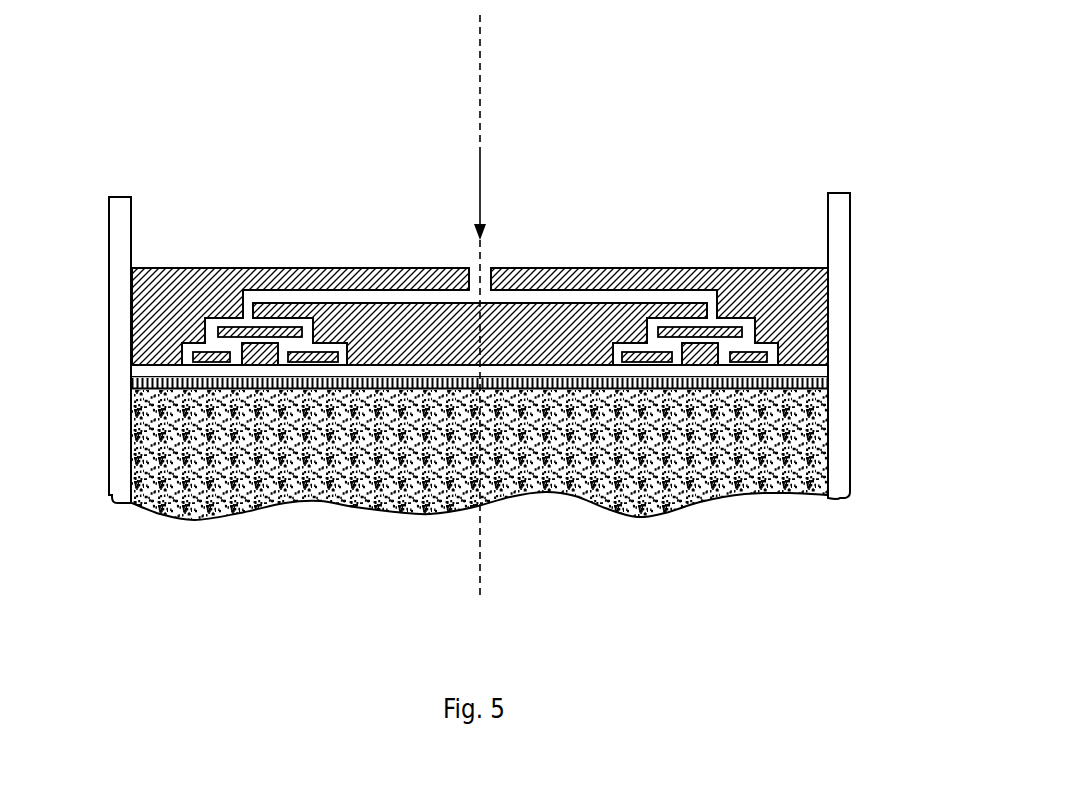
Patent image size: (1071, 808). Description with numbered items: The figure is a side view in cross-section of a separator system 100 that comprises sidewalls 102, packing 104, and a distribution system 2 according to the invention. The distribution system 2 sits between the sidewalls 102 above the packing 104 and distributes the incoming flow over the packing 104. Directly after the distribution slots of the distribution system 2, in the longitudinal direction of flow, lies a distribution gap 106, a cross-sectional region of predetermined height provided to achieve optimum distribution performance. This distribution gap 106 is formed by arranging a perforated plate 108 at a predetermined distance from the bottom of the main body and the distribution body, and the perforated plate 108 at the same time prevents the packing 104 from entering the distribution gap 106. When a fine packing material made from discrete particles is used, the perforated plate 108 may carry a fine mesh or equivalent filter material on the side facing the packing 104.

The separator system 100 is at (441, 324).
The distribution system 2 is at (250, 216).
The sidewalls 102 is at (829, 193).
The packing 104 is at (700, 502).
The distribution gap 106 is at (133, 370).
The perforated plate 108 is at (133, 382).